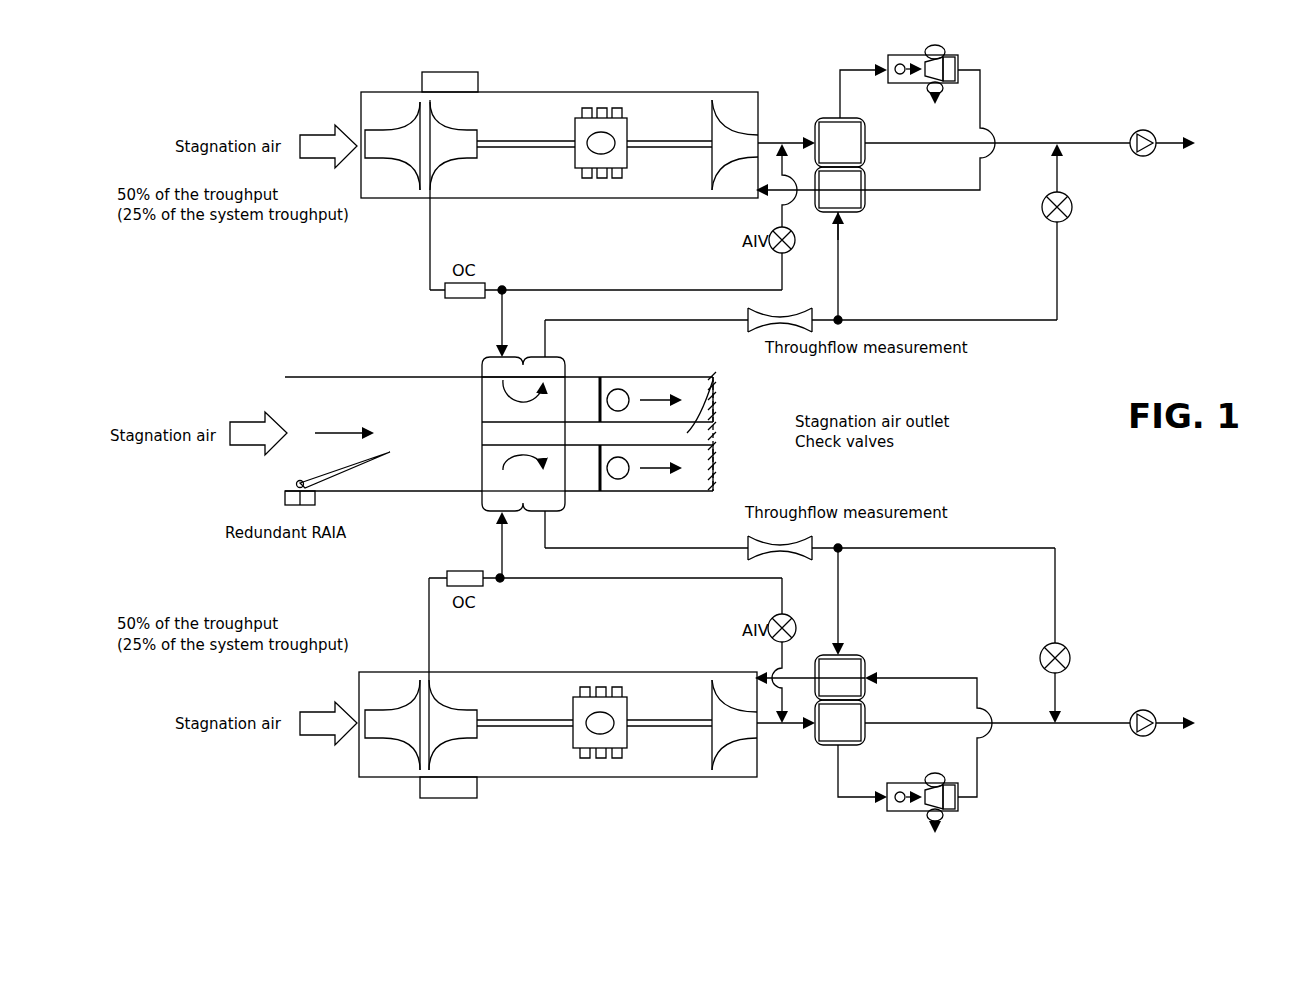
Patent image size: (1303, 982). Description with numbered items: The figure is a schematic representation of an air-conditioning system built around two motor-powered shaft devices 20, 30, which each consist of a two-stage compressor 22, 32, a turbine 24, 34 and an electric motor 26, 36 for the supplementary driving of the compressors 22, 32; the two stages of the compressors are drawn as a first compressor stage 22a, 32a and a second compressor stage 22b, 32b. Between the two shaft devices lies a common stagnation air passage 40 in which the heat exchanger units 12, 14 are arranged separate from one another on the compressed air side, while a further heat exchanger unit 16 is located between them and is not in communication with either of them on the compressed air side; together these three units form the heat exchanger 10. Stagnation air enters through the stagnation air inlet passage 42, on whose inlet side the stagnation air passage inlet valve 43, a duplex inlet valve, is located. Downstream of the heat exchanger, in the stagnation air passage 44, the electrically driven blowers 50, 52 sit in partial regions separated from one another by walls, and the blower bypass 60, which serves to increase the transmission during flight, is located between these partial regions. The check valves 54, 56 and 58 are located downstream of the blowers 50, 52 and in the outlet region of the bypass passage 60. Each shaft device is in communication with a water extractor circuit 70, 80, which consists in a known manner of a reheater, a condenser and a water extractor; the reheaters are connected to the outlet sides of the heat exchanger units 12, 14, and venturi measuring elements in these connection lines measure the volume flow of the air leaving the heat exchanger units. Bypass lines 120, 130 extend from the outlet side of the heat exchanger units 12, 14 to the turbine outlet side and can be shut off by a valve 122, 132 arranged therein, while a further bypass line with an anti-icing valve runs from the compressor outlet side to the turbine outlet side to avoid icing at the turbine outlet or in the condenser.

The heat exchanger 10 is at (514, 423).
The heat exchanger unit 12 is at (482, 398).
The heat exchanger unit 14 is at (482, 471).
The further heat exchanger unit 16 is at (565, 432).
The motor-powered shaft device 20 is at (558, 166).
The two-stage compressor 22 is at (417, 140).
The first compressor stage 22a is at (387, 157).
The second compressor stage 22b is at (453, 158).
The turbine 24 is at (735, 98).
The electric motor 26 is at (576, 128).
The motor-powered shaft device 30 is at (545, 702).
The two-stage compressor 32 is at (403, 730).
The first compressor stage 32a is at (390, 710).
The second compressor stage 32b is at (443, 712).
The turbine 34 is at (731, 757).
The electric motor 36 is at (575, 742).
The common stagnation air passage 40 is at (398, 431).
The stagnation air inlet passage 42 is at (355, 390).
The stagnation air passage inlet valve 43 is at (372, 460).
The stagnation air passage 44 is at (578, 480).
The blower 50 is at (605, 378).
The blower 52 is at (605, 492).
The check valve 54 is at (715, 400).
The check valve 56 is at (715, 470).
The check valve 58 is at (715, 433).
The blower bypass 60 is at (716, 382).
The water extractor circuit 70 is at (992, 83).
The water extractor circuit 80 is at (877, 660).
The bypass line 120 is at (1057, 310).
The valve 122 is at (1060, 220).
The bypass line 130 is at (1057, 556).
The valve 132 is at (1062, 648).